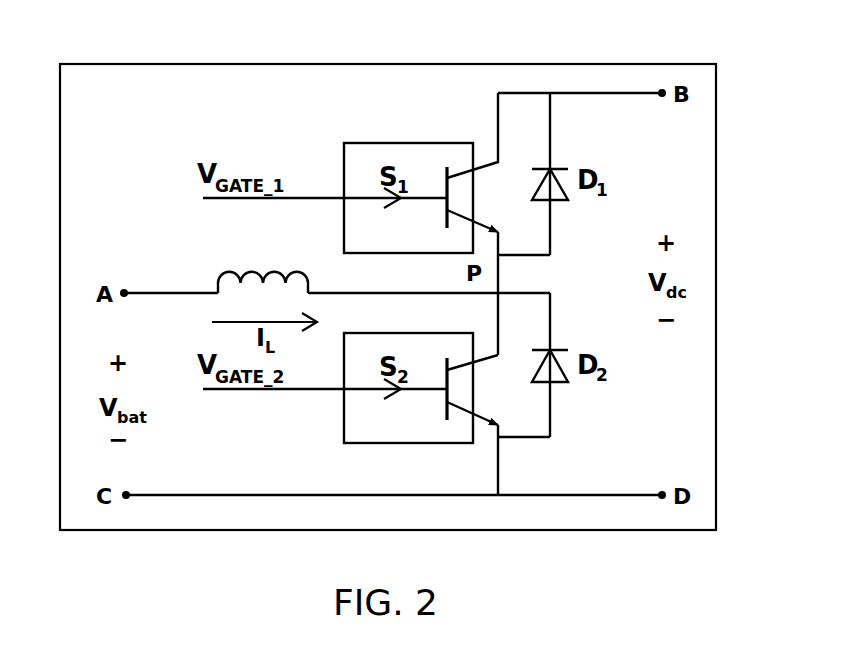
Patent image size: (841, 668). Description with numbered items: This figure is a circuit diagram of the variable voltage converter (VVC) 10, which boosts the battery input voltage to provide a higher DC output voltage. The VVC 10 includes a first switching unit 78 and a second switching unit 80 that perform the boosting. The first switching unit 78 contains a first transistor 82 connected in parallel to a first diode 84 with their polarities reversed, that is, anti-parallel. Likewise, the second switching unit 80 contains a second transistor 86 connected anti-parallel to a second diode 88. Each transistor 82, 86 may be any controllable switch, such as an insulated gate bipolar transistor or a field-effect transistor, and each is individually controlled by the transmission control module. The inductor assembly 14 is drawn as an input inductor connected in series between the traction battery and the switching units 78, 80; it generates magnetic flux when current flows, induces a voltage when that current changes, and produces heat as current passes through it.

The variable voltage converter 10 is at (624, 58).
The inductor assembly 14 is at (230, 268).
The first switching unit 78 is at (419, 134).
The second switching unit 80 is at (421, 451).
The first transistor 82 is at (445, 222).
The first diode 84 is at (558, 205).
The second transistor 86 is at (445, 363).
The second diode 88 is at (560, 386).